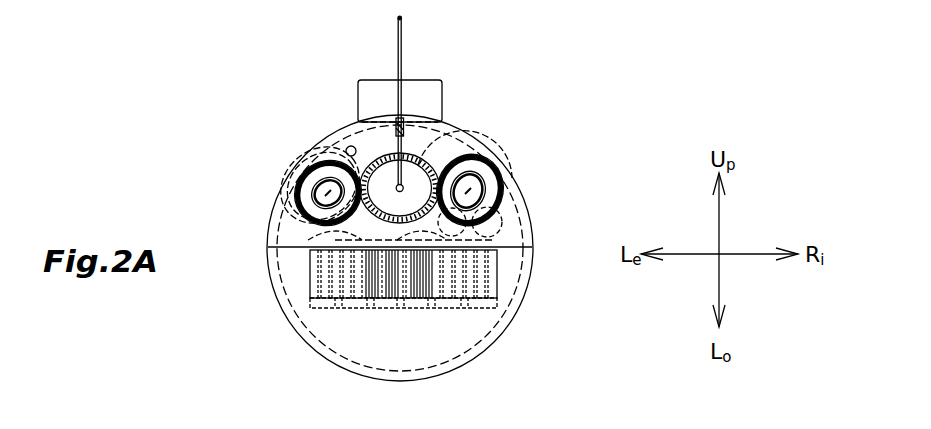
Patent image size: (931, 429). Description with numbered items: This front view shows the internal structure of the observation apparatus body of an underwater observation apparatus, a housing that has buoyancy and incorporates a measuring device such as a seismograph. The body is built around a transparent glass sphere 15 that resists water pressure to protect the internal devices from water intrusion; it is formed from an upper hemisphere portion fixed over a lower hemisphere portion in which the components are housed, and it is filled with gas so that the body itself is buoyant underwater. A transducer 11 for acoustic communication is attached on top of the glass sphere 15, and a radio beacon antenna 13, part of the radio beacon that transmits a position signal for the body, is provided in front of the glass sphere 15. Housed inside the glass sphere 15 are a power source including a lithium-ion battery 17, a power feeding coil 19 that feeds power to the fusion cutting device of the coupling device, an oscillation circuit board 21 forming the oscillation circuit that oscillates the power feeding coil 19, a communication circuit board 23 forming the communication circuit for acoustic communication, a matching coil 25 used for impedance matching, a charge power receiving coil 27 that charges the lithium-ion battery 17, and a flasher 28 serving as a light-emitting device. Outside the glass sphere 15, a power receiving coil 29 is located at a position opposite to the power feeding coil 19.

The transducer 11 is at (442, 90).
The radio beacon antenna 13 is at (403, 53).
The glass sphere 15 is at (514, 171).
The lithium-ion battery 17 is at (498, 272).
The power feeding coil 19 is at (298, 214).
The oscillation circuit board 21 is at (425, 229).
The communication circuit board 23 is at (323, 237).
The matching coil 25 is at (500, 220).
The charge power receiving coil 27 is at (477, 168).
The flasher 28 is at (418, 158).
The power receiving coil 29 is at (298, 163).